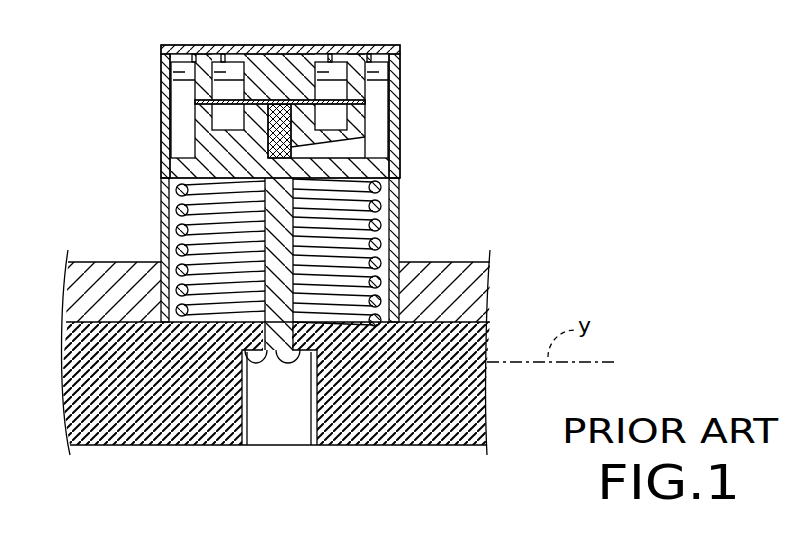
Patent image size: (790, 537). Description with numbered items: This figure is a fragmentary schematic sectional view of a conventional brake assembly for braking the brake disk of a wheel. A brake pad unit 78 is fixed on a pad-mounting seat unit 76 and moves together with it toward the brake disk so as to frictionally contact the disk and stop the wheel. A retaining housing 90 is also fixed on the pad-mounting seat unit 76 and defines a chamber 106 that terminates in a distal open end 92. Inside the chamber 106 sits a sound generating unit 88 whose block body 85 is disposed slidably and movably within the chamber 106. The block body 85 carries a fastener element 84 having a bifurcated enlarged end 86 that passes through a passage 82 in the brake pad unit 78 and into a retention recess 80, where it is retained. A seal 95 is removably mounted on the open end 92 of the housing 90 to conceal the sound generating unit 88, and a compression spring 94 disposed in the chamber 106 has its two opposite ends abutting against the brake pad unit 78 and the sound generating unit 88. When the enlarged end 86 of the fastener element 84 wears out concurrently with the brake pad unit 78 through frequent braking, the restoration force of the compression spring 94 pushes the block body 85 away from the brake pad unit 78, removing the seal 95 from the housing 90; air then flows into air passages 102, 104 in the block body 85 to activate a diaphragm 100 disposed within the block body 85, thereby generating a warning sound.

The pad-mounting seat unit 76 is at (462, 262).
The brake pad unit 78 is at (372, 428).
The retention recess 80 is at (297, 363).
The passage 82 is at (278, 353).
The fastener element 84 is at (203, 357).
The block body 85 is at (208, 138).
The bifurcated enlarged end 86 is at (256, 363).
The sound generating unit 88 is at (214, 157).
The retaining housing 90 is at (167, 207).
The distal open end 92 is at (397, 62).
The compression spring 94 is at (380, 242).
The seal 95 is at (297, 45).
The diaphragm 100 is at (197, 102).
The air passage 102 is at (231, 55).
The air passage 104 is at (332, 55).
The chamber 106 is at (377, 125).